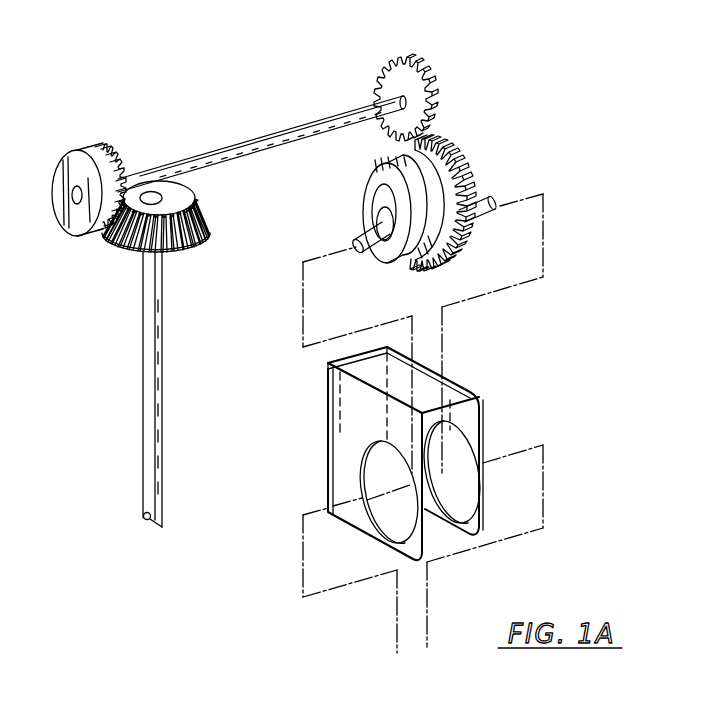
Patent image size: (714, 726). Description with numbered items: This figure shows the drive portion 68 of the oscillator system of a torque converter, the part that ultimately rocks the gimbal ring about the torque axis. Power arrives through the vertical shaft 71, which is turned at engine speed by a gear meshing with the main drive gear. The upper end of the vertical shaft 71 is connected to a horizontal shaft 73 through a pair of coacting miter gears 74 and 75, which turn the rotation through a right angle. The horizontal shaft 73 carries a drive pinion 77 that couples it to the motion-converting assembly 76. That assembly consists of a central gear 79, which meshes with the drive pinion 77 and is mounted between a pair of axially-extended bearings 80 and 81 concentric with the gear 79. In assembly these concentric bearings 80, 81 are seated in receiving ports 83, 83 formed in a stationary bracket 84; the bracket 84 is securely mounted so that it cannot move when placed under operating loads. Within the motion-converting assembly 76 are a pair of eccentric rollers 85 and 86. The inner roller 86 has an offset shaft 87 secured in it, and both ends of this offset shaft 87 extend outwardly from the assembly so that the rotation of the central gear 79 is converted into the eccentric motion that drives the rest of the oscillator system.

The drive mechanism 68 is at (435, 63).
The vertical shaft 71 is at (148, 415).
The horizontal shaft 73 is at (278, 130).
The miter gear 74 is at (100, 154).
The miter gear 75 is at (208, 220).
The motion-converting assembly 76 is at (456, 139).
The drive pinion 77 is at (437, 96).
The central gear 79 is at (457, 180).
The axially-extended bearing 80 is at (471, 202).
The axially-extended bearing 81 is at (371, 161).
The receiving ports 83 is at (385, 523).
The stationary bracket 84 is at (463, 393).
The eccentric roller 85 is at (374, 198).
The inner roller 86 is at (378, 221).
The offset shaft 87 is at (368, 262).